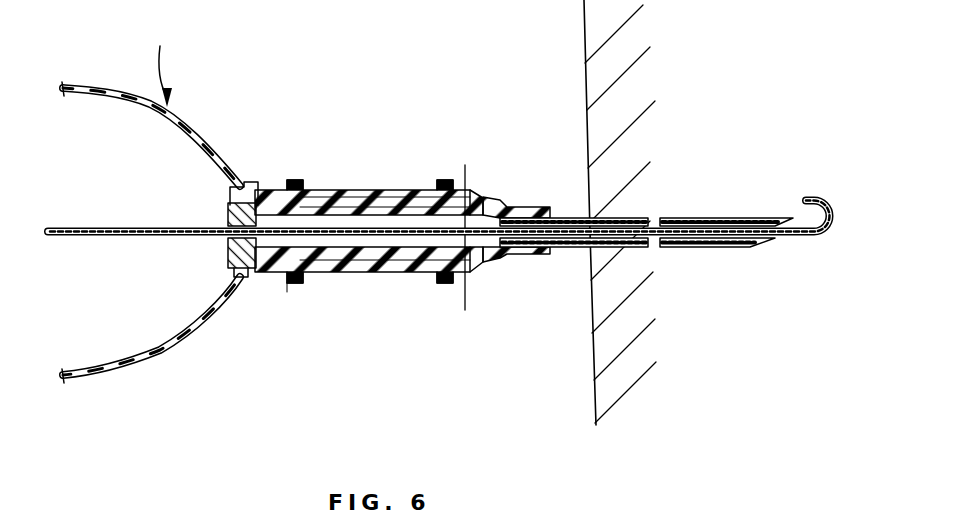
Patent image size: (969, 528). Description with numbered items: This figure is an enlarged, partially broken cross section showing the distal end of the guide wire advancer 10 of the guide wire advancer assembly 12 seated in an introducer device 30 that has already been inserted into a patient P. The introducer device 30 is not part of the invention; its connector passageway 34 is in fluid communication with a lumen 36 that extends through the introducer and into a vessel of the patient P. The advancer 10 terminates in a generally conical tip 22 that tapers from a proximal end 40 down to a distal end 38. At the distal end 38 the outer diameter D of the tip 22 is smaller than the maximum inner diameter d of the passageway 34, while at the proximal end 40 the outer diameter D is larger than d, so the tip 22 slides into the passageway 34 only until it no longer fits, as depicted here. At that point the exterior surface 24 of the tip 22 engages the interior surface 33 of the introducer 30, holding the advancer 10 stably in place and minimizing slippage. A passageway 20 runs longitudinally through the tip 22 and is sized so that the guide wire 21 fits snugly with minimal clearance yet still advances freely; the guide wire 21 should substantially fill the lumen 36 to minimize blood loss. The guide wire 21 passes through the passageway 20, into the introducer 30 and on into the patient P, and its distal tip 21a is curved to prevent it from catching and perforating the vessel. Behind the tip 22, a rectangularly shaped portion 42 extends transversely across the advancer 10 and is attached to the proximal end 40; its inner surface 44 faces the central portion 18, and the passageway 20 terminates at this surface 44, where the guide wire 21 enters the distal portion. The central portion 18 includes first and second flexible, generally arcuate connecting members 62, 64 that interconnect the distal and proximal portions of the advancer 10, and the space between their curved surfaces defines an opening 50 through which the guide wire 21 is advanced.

The guide wire advancer 10 is at (164, 64).
The guide wire advancer assembly 12 is at (336, 118).
The central portion 18 is at (172, 122).
The passageway 20 is at (461, 197).
The guide wire 21 is at (115, 228).
The distal tip of guide wire 21a is at (812, 212).
The tip 22 is at (392, 264).
The exterior surface 24 is at (288, 186).
The introducer device 30 is at (514, 188).
The interior surface 33 is at (353, 198).
The connector passageway 34 is at (407, 198).
The lumen 36 is at (611, 217).
The distal end of tip 38 is at (475, 255).
The proximal end of tip 40 is at (257, 268).
The rectangularly shaped portion 42 is at (255, 185).
The inner surface 44 is at (230, 215).
The opening 50 is at (157, 284).
The first connecting member 62 is at (183, 129).
The second connecting member 64 is at (157, 354).
The outer diameter D is at (467, 295).
The maximum inner diameter d is at (287, 290).
The patient P is at (624, 212).